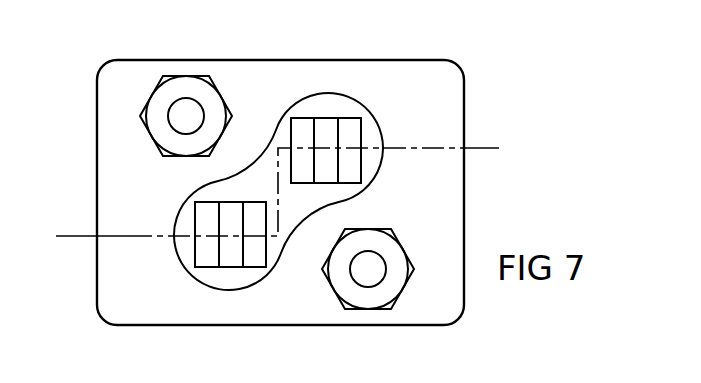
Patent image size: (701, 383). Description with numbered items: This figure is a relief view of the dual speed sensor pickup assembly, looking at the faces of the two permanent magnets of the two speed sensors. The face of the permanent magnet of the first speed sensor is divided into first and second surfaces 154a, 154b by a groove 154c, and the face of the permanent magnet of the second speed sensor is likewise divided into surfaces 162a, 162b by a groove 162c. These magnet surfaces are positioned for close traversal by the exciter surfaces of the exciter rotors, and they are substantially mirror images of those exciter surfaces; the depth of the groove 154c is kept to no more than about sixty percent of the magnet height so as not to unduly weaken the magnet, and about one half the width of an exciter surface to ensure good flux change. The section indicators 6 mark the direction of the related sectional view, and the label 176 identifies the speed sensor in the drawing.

The section line 6- 6 is at (56, 236).
The permanent magnet surface 162a is at (303, 130).
The permanent magnet surface 162b is at (352, 128).
The groove 162c is at (327, 128).
The permanent magnet surface 154a is at (205, 257).
The permanent magnet surface 154b is at (253, 257).
The groove 154c is at (229, 257).
The speed sensor 176 is at (277, 368).